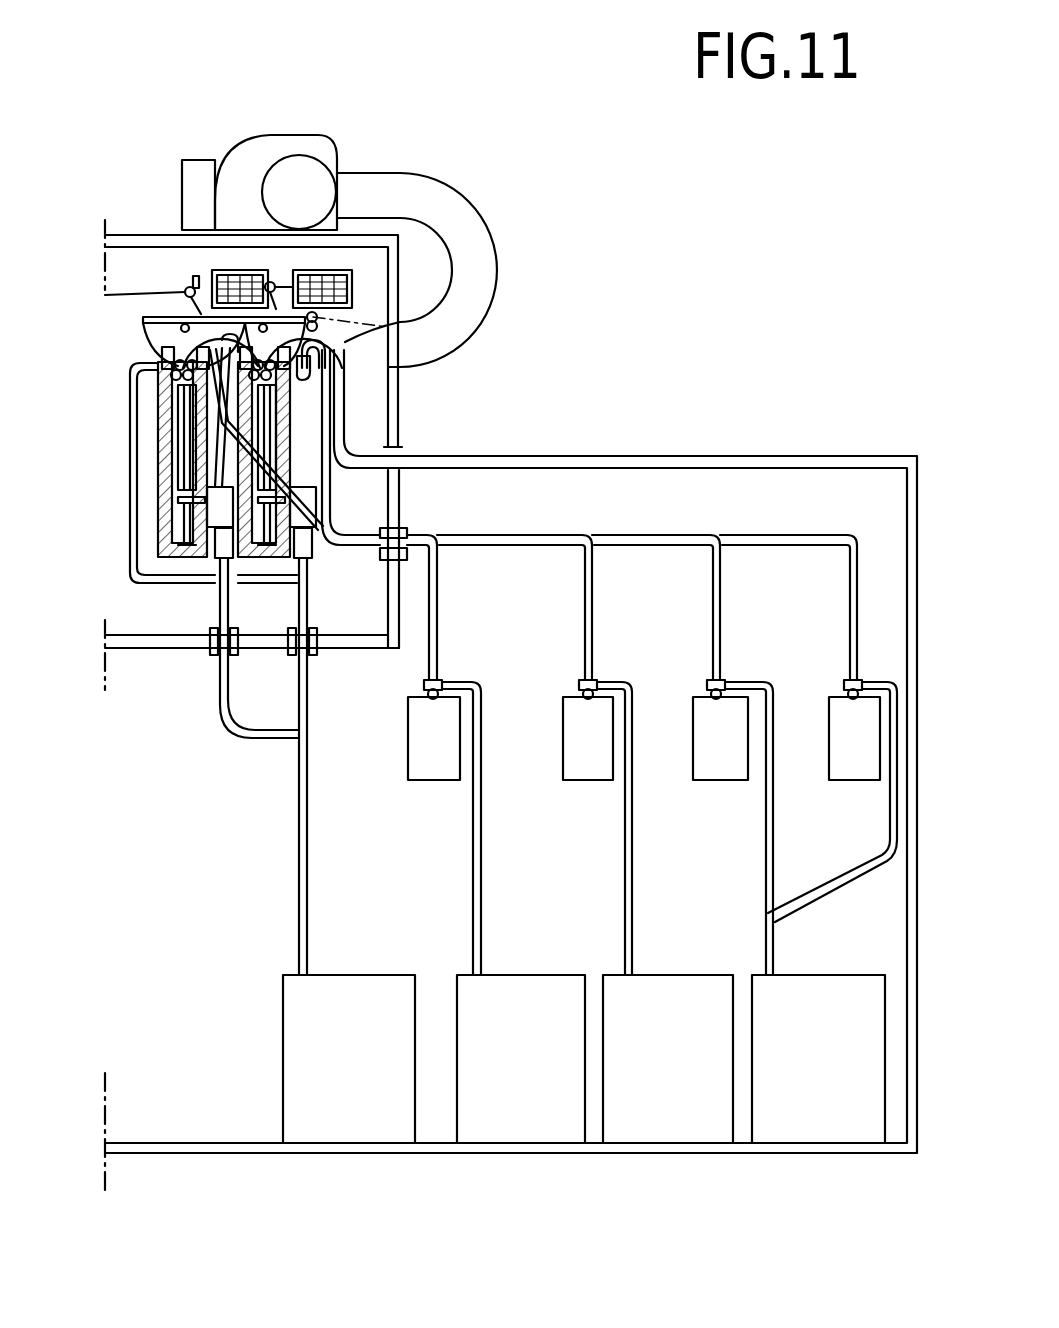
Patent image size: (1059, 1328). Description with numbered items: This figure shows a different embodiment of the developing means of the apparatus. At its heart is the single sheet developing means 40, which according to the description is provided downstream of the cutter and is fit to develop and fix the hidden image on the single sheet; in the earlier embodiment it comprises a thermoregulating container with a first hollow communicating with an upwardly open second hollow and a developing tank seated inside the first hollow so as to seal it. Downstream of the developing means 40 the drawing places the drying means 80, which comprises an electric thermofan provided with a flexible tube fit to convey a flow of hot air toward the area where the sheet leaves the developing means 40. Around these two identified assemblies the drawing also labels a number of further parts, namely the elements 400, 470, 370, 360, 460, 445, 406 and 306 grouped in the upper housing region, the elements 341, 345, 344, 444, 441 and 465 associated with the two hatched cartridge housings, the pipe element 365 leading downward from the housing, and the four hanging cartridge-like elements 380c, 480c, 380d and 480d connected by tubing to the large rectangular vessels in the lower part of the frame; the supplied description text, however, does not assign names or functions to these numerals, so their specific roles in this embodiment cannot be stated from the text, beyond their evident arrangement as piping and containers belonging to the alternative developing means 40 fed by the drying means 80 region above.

The drying means 80 is at (335, 128).
The air duct 400 is at (221, 307).
The filter 470 is at (282, 300).
The lever 370 is at (160, 308).
The cyclone separator plate 360 is at (213, 337).
The valve 460 is at (330, 348).
The exhaust pipe 445 is at (268, 440).
The conduit 406 is at (355, 363).
The ball bearings 306 is at (173, 366).
The single sheet developing means 40 is at (124, 387).
The cartridge housing 341 is at (163, 517).
The piston rod 345 is at (185, 403).
The piston 344 is at (167, 444).
The second piston 444 is at (247, 445).
The valve block 441 is at (237, 522).
The connecting tube 465 is at (312, 495).
The outlet pipe 365 is at (218, 512).
The collection cartridge 380c is at (423, 767).
The collection cartridge 480c is at (580, 767).
The collection cartridge 380d is at (717, 767).
The collection cartridge 480d is at (840, 767).